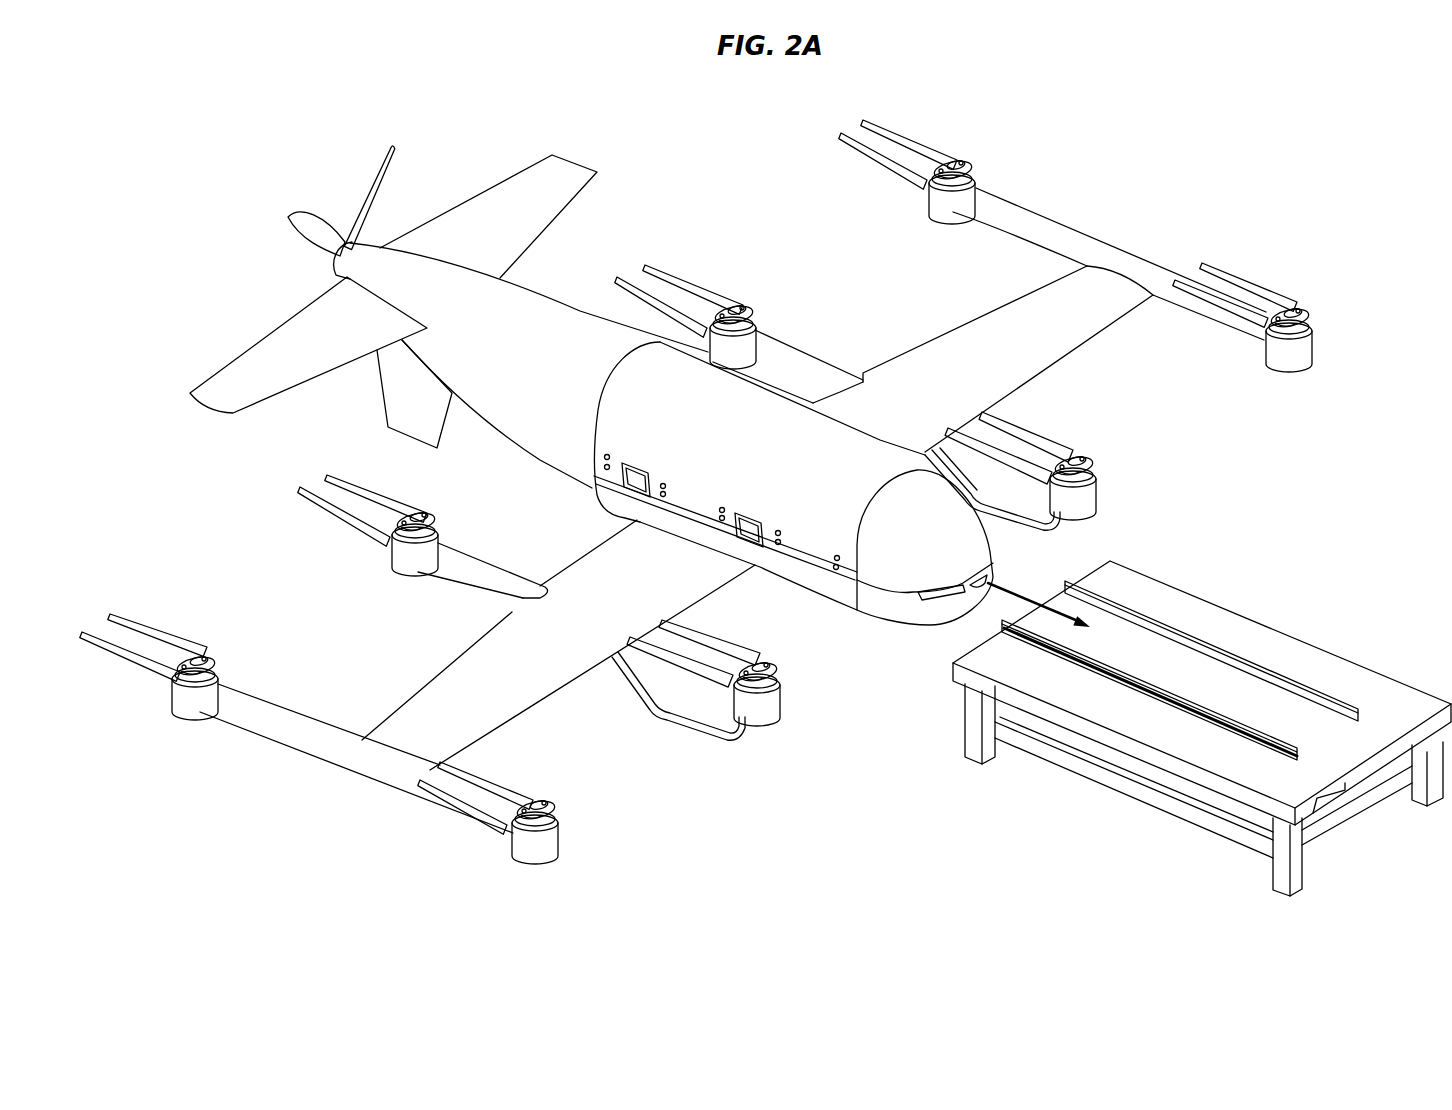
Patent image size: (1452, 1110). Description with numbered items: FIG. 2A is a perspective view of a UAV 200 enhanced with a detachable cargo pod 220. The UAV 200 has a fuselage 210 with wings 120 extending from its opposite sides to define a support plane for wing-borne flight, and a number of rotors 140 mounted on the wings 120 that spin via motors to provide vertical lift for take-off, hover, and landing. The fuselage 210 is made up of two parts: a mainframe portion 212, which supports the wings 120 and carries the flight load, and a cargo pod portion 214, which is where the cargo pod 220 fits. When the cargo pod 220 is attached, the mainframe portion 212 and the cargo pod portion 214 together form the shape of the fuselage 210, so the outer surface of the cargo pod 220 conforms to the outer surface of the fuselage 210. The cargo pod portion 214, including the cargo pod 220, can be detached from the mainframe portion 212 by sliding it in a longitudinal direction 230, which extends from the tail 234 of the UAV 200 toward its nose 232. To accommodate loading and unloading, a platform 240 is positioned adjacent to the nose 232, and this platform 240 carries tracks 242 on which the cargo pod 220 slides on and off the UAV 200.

The UAV 200 is at (1291, 106).
The fuselage 210 is at (535, 271).
The tail 234 is at (390, 218).
The wings 120 is at (943, 350).
The rotors 140 is at (1292, 303).
The cargo pod 220 is at (794, 483).
The cargo pod portion 214 is at (607, 442).
The mainframe portion 212 is at (618, 497).
The nose 232 is at (1011, 564).
The longitudinal direction 230 is at (1040, 602).
The platform 240 is at (1282, 643).
The tracks 242 is at (1353, 703).